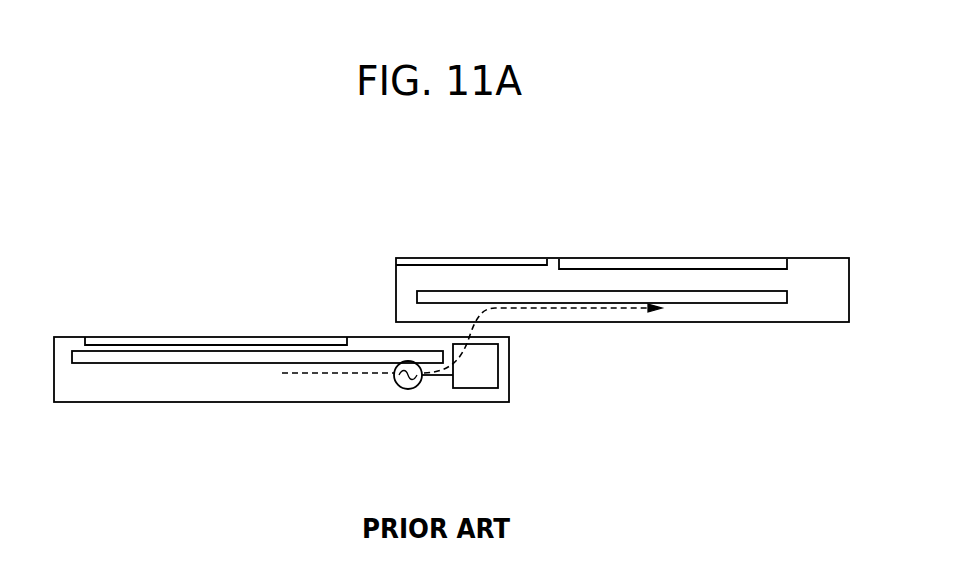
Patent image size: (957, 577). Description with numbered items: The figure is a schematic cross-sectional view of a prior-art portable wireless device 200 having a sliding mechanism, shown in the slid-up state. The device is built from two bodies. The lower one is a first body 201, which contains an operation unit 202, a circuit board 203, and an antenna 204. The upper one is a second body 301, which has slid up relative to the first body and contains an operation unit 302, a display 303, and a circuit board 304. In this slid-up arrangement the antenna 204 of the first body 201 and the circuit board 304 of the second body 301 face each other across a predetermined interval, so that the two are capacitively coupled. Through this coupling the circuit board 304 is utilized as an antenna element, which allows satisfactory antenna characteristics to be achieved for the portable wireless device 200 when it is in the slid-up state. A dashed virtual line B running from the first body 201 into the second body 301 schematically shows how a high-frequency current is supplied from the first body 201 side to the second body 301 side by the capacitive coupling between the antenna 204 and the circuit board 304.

The portable wireless device 200 is at (748, 222).
The second body 301 is at (829, 264).
The operation unit 302 is at (444, 264).
The display 303 is at (617, 265).
The circuit board 304 is at (692, 295).
The first body 201 is at (199, 402).
The operation unit 202 is at (194, 343).
The circuit board 203 is at (267, 357).
The antenna 204 is at (477, 375).
The virtual line B is at (345, 378).